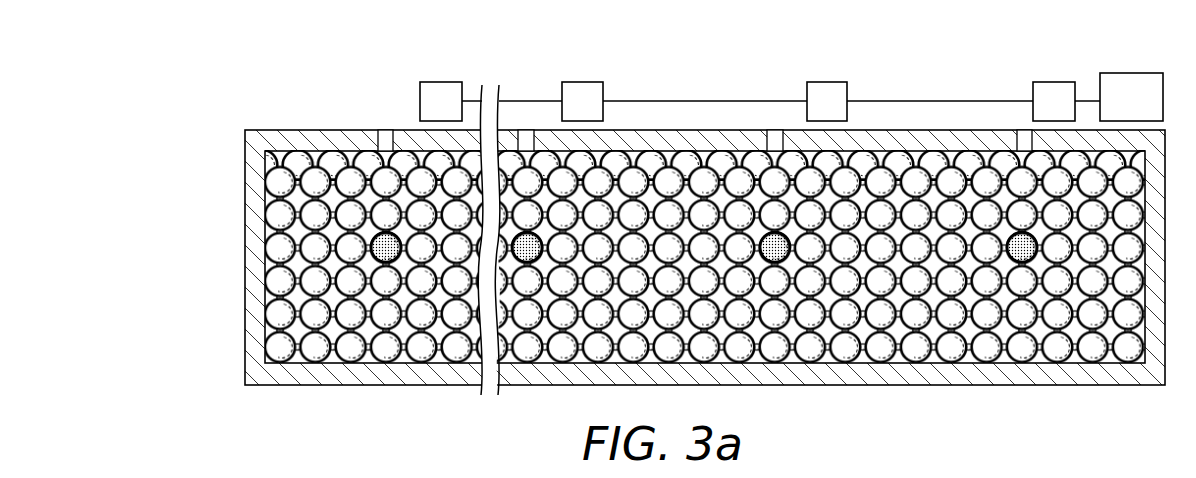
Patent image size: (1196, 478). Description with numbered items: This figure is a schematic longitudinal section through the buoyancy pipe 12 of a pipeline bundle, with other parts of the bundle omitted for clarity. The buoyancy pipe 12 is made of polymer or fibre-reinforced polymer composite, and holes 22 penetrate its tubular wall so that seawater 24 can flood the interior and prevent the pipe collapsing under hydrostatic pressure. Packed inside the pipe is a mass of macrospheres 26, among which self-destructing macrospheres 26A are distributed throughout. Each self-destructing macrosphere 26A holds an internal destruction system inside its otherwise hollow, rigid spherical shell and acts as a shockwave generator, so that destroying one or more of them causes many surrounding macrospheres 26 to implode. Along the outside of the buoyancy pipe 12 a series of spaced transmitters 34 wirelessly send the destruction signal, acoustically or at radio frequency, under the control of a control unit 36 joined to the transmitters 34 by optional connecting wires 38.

The buoyancy pipe 12 is at (224, 114).
The holes 22 is at (385, 140).
The seawater 24 is at (275, 160).
The macrospheres 26 is at (292, 262).
The self-destructing macrospheres 26A is at (388, 264).
The transmitters 34 is at (440, 90).
The control unit 36 is at (1133, 80).
The connecting wires 38 is at (940, 100).